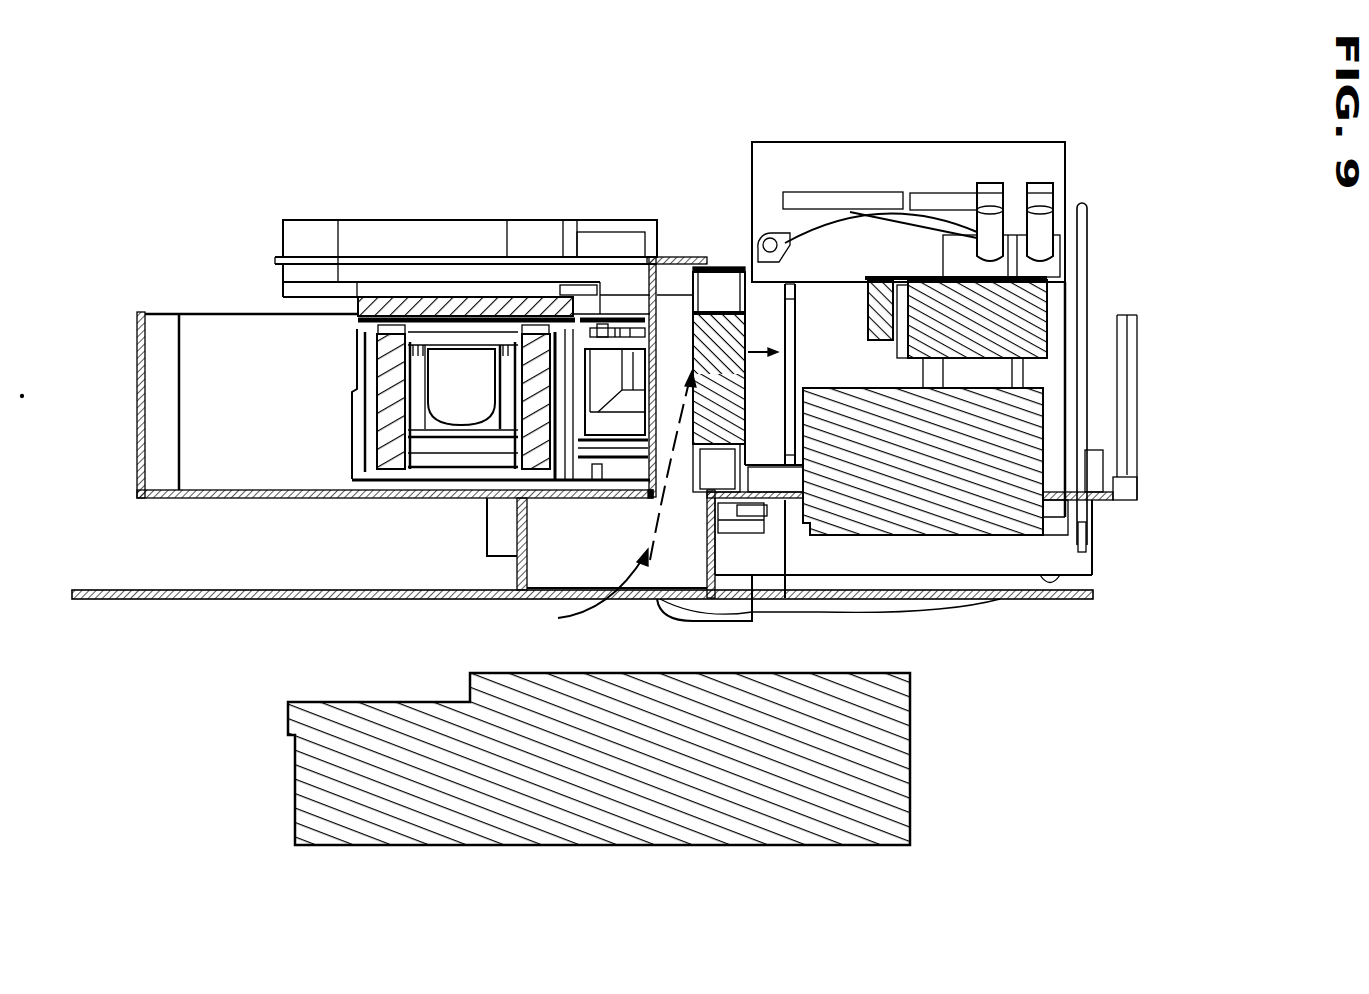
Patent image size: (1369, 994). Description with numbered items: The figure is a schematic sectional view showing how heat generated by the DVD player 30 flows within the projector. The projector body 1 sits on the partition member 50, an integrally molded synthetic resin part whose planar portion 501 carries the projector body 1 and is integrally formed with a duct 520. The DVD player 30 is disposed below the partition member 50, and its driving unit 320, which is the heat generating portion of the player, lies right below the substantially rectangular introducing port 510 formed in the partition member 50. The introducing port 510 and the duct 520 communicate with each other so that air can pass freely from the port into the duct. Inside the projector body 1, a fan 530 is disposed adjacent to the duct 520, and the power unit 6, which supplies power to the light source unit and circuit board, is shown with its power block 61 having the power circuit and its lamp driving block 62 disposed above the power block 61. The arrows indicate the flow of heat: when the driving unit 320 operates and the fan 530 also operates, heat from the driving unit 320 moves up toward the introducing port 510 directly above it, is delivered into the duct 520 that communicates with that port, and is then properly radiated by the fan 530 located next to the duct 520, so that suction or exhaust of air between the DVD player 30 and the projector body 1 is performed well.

The projector body 1 is at (550, 178).
The duct 520 is at (648, 262).
The fan 530 is at (718, 322).
The power unit 6 is at (1011, 383).
The power block 61 is at (1003, 425).
The lamp driving block 62 is at (1003, 307).
The partition member 50 is at (430, 500).
The planar portion 501 is at (787, 500).
The introducing port 510 is at (672, 498).
The driving unit 320 is at (895, 750).
The DVD player 30 is at (1000, 820).